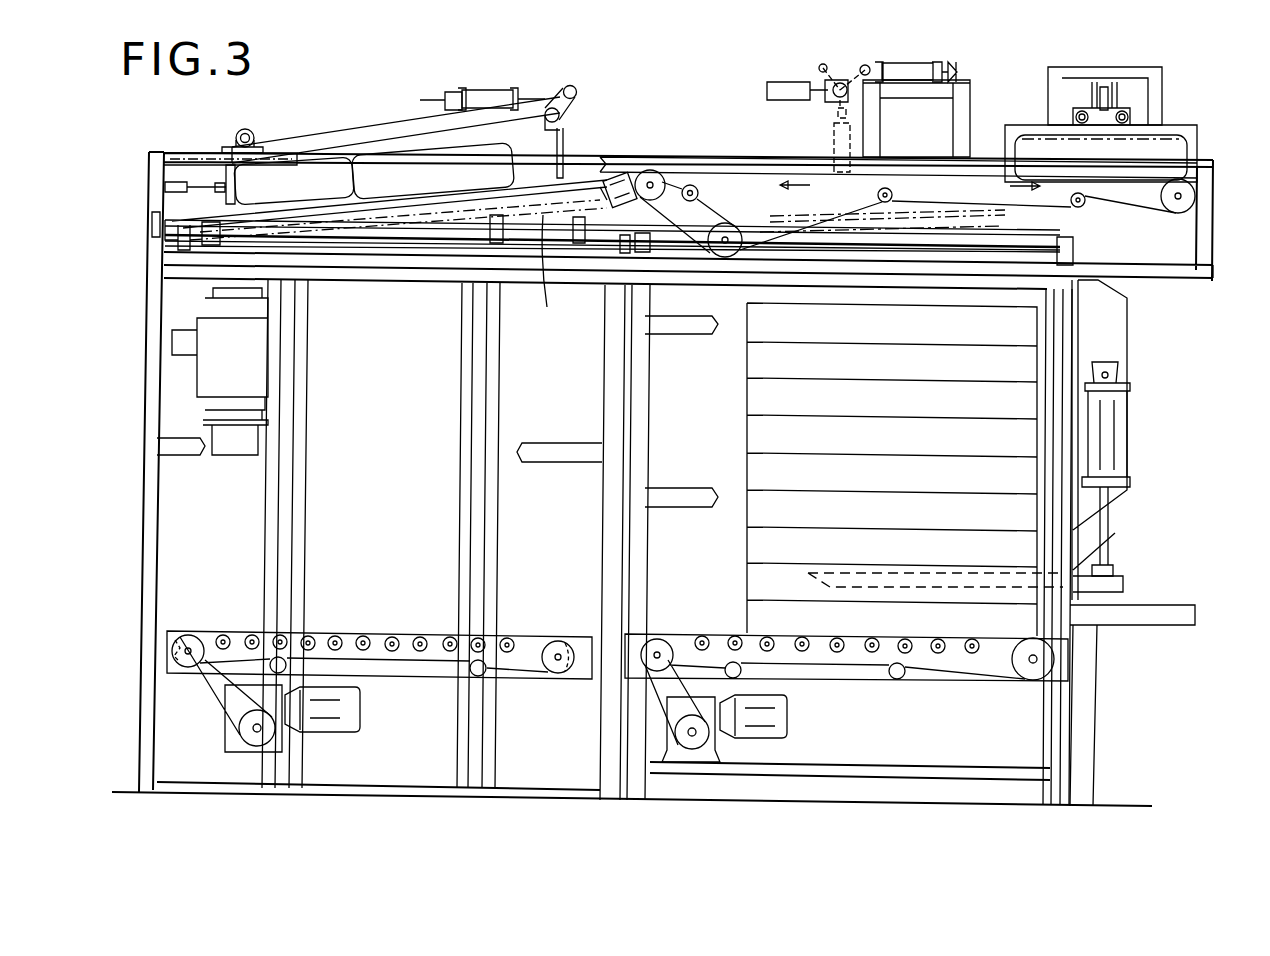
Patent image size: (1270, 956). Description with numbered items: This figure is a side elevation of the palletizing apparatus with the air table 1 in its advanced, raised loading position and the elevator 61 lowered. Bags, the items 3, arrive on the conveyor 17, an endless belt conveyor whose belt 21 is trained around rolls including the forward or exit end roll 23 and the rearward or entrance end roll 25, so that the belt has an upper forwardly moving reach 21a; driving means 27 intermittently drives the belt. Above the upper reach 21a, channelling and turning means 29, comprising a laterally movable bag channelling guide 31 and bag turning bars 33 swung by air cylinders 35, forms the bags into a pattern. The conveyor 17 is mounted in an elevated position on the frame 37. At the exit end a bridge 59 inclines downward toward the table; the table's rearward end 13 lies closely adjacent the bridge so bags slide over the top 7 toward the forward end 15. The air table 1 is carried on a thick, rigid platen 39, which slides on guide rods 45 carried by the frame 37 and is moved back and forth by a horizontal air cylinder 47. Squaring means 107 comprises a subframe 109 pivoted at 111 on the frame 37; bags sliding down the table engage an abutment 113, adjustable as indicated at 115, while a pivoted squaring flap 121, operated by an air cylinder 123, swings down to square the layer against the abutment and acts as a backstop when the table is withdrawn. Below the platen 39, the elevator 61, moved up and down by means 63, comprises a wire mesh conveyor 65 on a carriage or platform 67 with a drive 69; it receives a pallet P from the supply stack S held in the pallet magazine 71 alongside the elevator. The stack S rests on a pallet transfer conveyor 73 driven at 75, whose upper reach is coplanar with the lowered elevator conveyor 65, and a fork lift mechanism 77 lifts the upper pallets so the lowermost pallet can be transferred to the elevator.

The air table 1 is at (872, 312).
The items 3 is at (1190, 152).
The top 7 is at (1213, 255).
The rearward end 13 is at (618, 240).
The forward end 15 is at (213, 237).
The conveyor 17 is at (747, 165).
The belt 21 is at (1130, 202).
The upper reach 21a is at (930, 157).
The forward or exit end roll 23 is at (655, 172).
The rearward or entrance end roll 25 is at (1183, 196).
The belt driving means 27 is at (700, 200).
The channelling and turning means 29 is at (1000, 73).
The bag channelling guide 31 is at (1192, 128).
The bag turning bars 33 is at (790, 82).
The air cylinders 35 is at (917, 62).
The frame 37 is at (150, 522).
The platen 39 is at (372, 242).
The guide rods 45 is at (930, 246).
The air cylinder 47 is at (445, 242).
The bridge 59 is at (627, 173).
The elevator 61 is at (183, 636).
The elevator moving means 63 is at (183, 368).
The wire mesh conveyor 65 is at (375, 630).
The elevator carriage or platform 67 is at (510, 688).
The drive 69 is at (215, 712).
The pallet magazine 71 is at (660, 540).
The pallet transfer conveyor 73 is at (680, 632).
The drive 75 is at (750, 748).
The fork lift mechanism 77 is at (1133, 455).
The squaring means 107 is at (505, 72).
The subframe 109 is at (358, 120).
The pivot 111 is at (250, 128).
The abutment 113 is at (228, 175).
The abutment adjustment 115 is at (172, 195).
The squaring member or flap 121 is at (568, 155).
The air cylinder 123 is at (478, 92).
The supply stack S is at (740, 375).
The pallet P is at (745, 470).